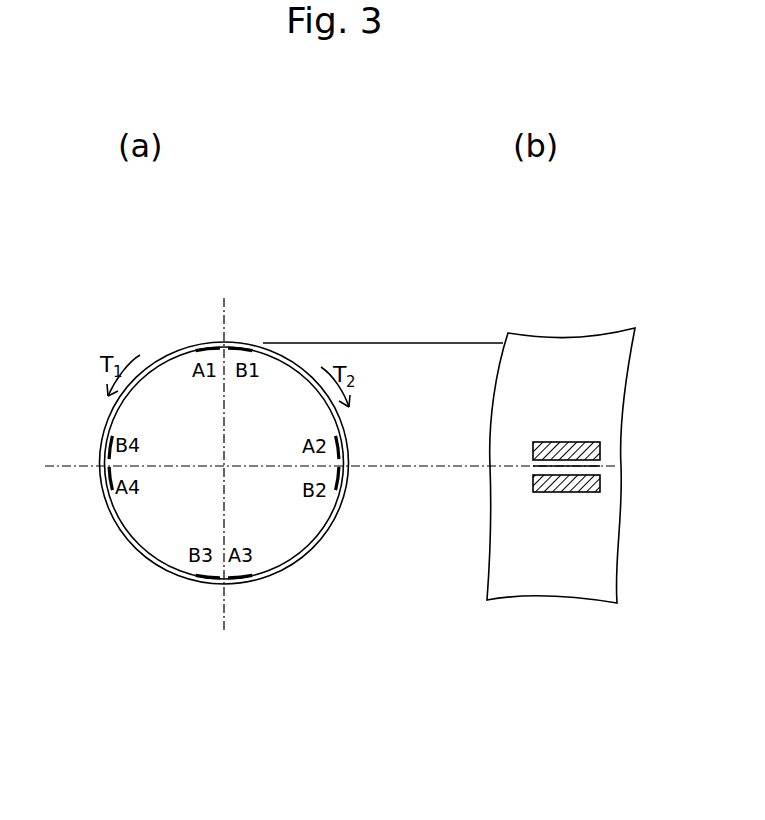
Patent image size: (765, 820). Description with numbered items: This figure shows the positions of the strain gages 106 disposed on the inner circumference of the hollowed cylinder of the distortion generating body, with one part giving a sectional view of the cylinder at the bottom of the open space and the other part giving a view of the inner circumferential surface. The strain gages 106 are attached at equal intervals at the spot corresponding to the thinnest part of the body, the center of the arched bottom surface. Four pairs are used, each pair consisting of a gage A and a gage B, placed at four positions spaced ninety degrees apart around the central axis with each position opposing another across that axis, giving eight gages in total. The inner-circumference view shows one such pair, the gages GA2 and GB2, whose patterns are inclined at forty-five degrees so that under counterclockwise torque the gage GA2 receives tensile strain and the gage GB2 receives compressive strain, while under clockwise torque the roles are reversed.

The strain gages 106 is at (207, 345).
The strain gage A of the pair at position A2/B2 GA2 is at (555, 442).
The strain gage B of the pair at position A2/B2 GB2 is at (565, 492).